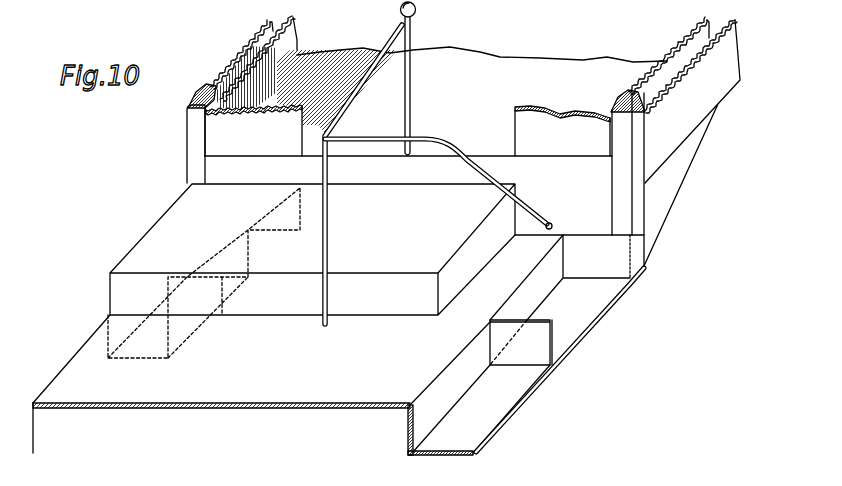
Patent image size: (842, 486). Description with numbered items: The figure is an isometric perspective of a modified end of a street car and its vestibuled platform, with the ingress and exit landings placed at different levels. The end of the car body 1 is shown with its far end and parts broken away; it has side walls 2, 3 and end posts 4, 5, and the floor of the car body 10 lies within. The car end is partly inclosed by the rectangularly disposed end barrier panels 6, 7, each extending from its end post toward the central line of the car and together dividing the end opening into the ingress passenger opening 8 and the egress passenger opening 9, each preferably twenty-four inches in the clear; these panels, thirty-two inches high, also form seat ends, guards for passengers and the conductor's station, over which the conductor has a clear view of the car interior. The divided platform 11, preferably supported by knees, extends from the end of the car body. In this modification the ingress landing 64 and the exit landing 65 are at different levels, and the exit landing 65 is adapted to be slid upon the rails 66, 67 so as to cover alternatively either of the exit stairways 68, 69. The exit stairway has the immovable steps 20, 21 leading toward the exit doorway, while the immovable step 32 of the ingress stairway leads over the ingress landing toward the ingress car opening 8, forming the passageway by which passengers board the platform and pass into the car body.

The end of the car body 1 is at (662, 182).
The side wall 2 is at (240, 62).
The side wall 3 is at (683, 110).
The end post 4 is at (195, 128).
The end post 5 is at (637, 152).
The end barrier panel 6 is at (253, 130).
The end barrier panel 7 is at (562, 131).
The ingress passenger opening 8 is at (438, 174).
The egress passenger opening 9 is at (434, 78).
The floor of the car body 10 is at (482, 64).
The divided platform 11 is at (252, 412).
The immovable step 20 is at (524, 277).
The immovable step 21 is at (578, 277).
The immovable step 32 is at (479, 388).
The ingress landing 64 is at (210, 359).
The exit landing 65 is at (312, 249).
The rail 66 is at (552, 320).
The rail 67 is at (618, 238).
The exit stairway 68 is at (160, 332).
The exit stairway 69 is at (614, 292).